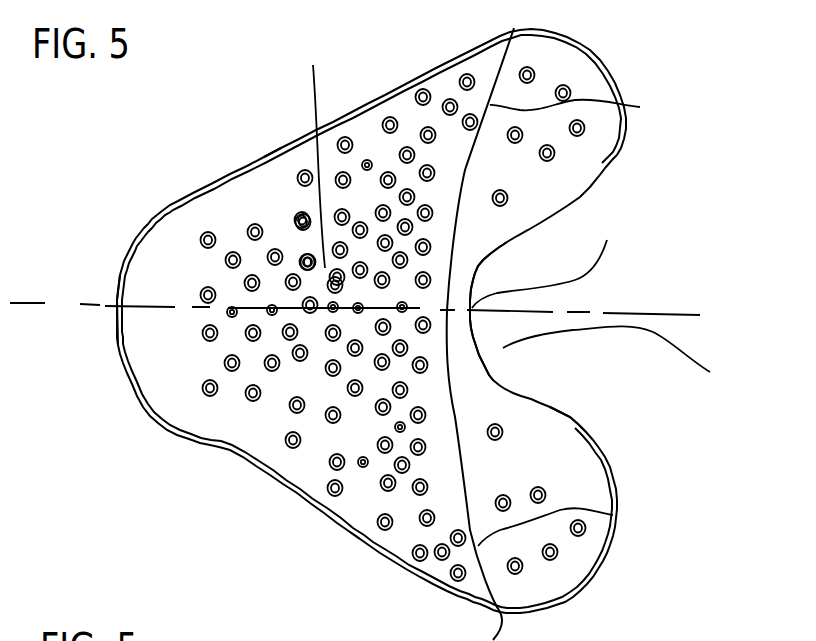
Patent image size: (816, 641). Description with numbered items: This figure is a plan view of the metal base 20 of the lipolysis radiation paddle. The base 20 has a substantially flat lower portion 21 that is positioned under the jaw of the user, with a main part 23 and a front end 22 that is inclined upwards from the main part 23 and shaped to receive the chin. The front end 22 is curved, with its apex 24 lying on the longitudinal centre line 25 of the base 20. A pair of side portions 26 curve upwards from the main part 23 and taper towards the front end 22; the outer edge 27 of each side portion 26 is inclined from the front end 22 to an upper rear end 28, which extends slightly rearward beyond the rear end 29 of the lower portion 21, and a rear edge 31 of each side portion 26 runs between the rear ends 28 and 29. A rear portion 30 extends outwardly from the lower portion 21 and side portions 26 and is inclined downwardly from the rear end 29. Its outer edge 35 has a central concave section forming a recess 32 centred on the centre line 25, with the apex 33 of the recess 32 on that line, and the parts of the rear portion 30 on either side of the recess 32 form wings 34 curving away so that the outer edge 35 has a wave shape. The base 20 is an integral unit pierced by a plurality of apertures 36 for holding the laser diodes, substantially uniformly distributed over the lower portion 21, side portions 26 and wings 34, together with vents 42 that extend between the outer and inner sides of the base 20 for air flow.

The base 20 is at (270, 530).
The lower portion 21 is at (290, 258).
The front end 22 is at (135, 362).
The main part 23 is at (315, 151).
The apex 24 is at (112, 318).
The longitudinal centre line 25 is at (643, 307).
The side portions 26 is at (412, 126).
The outer edge 27 is at (278, 146).
The upper rear end 28 is at (514, 28).
The rear end 29 is at (474, 284).
The rear portion 30 is at (470, 385).
The rear edge 31 is at (640, 107).
The recess 32 is at (628, 358).
The apex 33 is at (553, 259).
The wing 34 is at (583, 83).
The outer edge 35 is at (575, 420).
The apertures 36 is at (580, 130).
The vents 42 is at (367, 160).